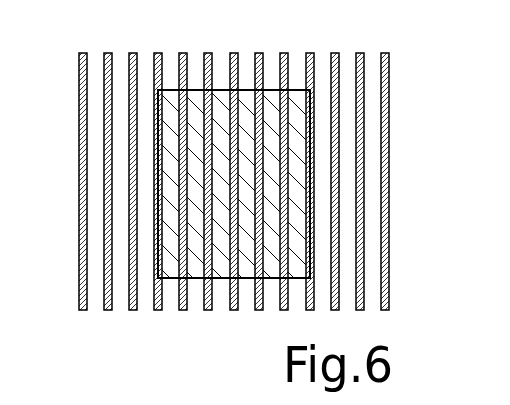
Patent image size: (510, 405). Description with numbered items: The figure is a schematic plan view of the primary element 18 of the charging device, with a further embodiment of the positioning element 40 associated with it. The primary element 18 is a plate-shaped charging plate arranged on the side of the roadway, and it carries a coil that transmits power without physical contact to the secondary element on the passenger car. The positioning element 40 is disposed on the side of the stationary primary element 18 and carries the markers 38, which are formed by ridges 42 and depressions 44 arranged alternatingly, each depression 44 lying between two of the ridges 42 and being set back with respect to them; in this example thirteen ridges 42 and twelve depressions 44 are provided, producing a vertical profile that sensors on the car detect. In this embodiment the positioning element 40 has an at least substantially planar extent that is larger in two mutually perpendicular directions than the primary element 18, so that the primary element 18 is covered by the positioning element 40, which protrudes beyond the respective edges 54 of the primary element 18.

The primary element 18 is at (268, 155).
The markers 38 is at (364, 137).
The positioning element 40 is at (419, 170).
The ridges 42 is at (389, 62).
The depressions 44 is at (407, 155).
The edges 54 is at (158, 140).